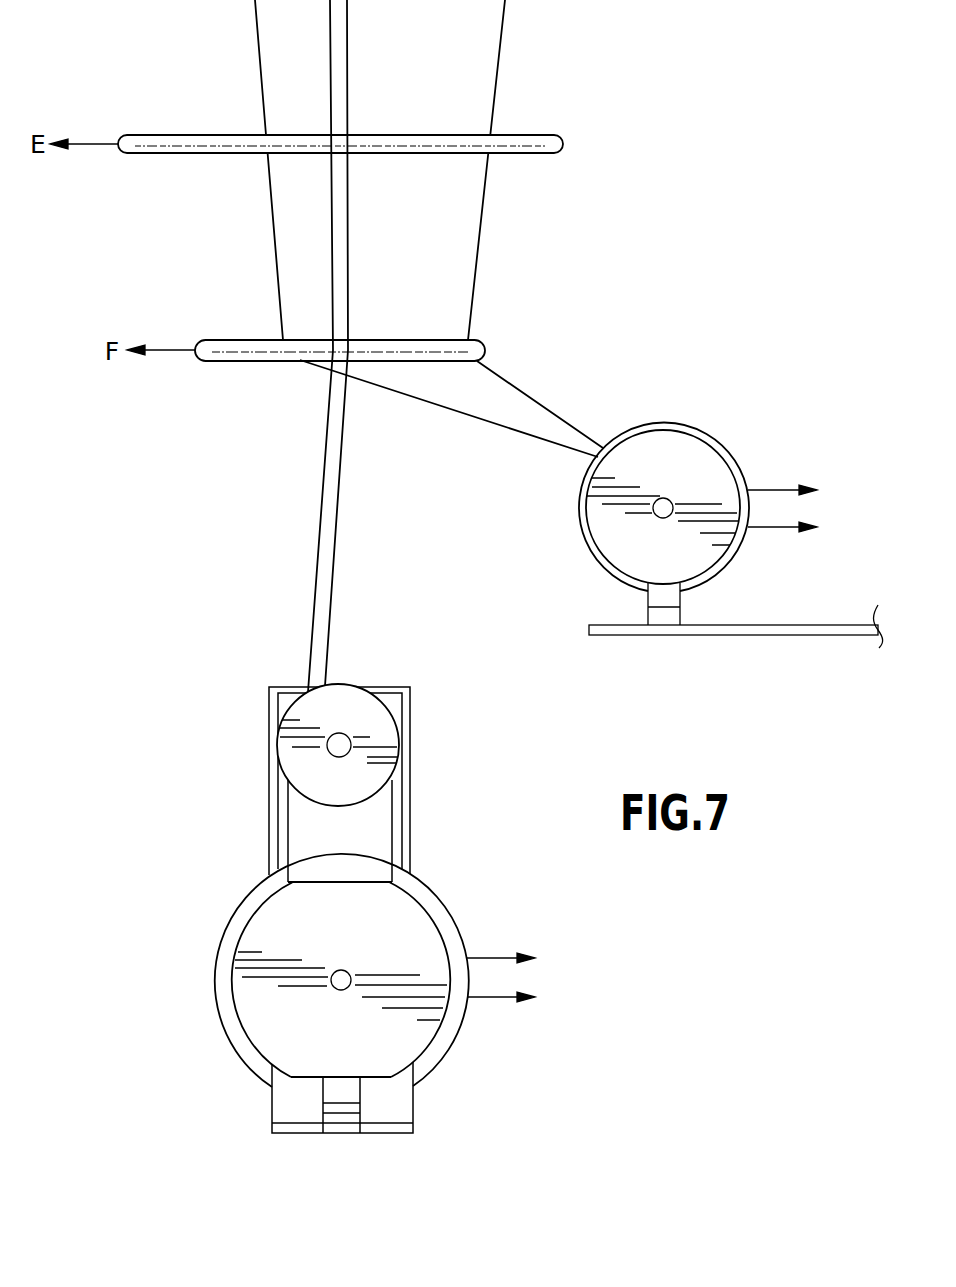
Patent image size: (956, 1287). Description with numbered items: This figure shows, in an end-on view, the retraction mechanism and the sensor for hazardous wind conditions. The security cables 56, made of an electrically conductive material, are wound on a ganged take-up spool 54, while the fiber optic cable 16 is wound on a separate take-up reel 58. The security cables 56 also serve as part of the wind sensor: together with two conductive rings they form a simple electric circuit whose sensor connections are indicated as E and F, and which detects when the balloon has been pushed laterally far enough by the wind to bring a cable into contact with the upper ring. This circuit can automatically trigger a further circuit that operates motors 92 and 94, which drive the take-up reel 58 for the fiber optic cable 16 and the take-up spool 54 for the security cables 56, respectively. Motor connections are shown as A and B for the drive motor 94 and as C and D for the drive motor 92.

The fiber optic cable 16 is at (317, 562).
The take-up spool 54 is at (701, 505).
The security cables 56 is at (550, 408).
The take-up reel 58 is at (451, 908).
The drive motor 92 is at (255, 940).
The drive motor 94 is at (605, 527).